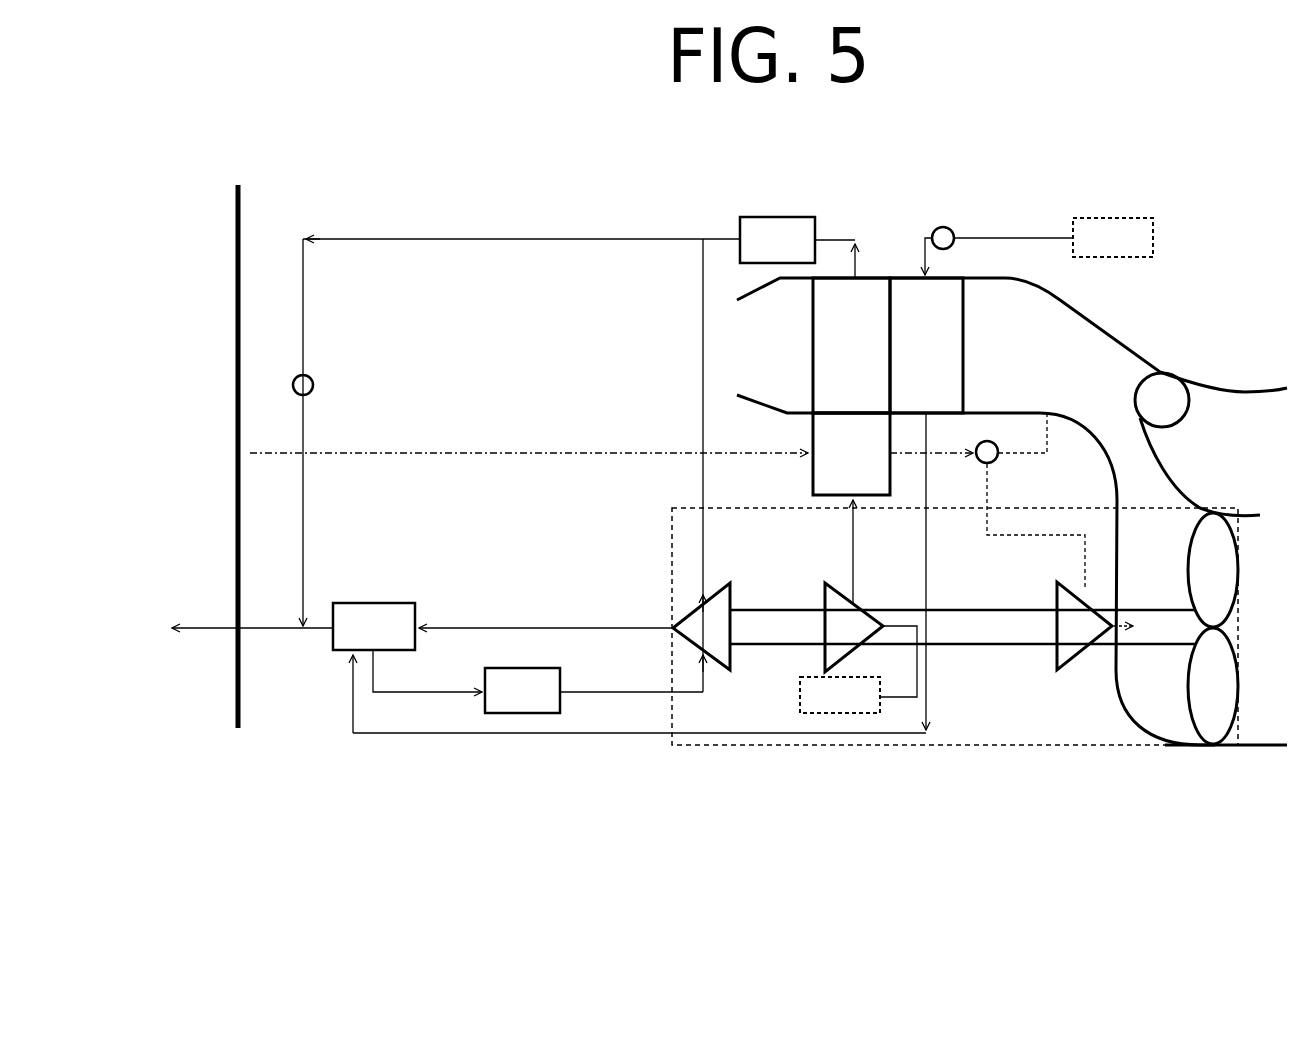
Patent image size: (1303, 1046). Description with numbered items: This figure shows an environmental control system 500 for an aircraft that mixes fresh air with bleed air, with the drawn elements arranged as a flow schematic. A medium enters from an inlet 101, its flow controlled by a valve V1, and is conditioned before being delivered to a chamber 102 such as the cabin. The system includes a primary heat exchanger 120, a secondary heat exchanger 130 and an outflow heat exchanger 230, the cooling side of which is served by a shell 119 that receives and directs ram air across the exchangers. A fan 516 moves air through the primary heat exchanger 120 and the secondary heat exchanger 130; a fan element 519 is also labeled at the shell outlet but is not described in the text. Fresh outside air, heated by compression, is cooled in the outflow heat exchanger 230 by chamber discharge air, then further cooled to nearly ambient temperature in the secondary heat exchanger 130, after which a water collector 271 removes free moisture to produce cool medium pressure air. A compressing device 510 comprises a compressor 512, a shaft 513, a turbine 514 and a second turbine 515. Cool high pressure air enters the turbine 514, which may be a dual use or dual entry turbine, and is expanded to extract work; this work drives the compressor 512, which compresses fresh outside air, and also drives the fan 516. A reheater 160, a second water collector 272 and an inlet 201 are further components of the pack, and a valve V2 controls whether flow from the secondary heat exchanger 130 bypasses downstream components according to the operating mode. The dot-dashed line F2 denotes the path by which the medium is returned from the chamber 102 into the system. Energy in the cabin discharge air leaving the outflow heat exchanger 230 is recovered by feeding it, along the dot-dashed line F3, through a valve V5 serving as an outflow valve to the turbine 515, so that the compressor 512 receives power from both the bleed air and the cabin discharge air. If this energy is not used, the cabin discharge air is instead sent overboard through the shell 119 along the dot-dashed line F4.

The environmental control system 500 is at (1224, 123).
The chamber 102 is at (236, 184).
The water collector 271 is at (777, 240).
The valve V1 is at (932, 229).
The inlet 101 is at (1113, 237).
The shell 119 is at (1160, 372).
The secondary heat exchanger 130 is at (851, 345).
The primary heat exchanger 120 is at (926, 345).
The outflow heat exchanger 230 is at (851, 454).
The valve V2 is at (294, 386).
The dot-dashed line F2 is at (460, 448).
The valve V5 is at (980, 447).
The dot-dashed line F4 is at (1083, 410).
The dot-dashed line F3 is at (994, 541).
The fan 519 is at (1232, 514).
The fan 516 is at (1163, 685).
The reheater 160 is at (374, 626).
The water collector 272 is at (522, 690).
The inlet 201 is at (840, 695).
The turbine 514 is at (702, 626).
The compressor 512 is at (854, 627).
The turbine 515 is at (1095, 626).
The shaft 513 is at (1025, 648).
The compressing device 510 is at (762, 750).